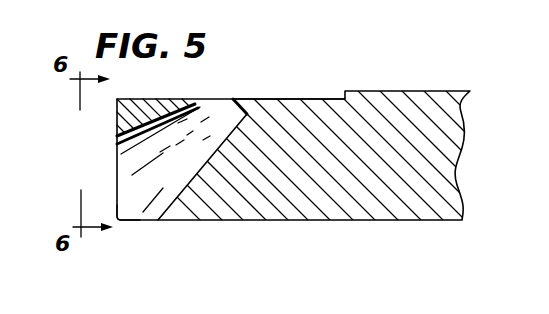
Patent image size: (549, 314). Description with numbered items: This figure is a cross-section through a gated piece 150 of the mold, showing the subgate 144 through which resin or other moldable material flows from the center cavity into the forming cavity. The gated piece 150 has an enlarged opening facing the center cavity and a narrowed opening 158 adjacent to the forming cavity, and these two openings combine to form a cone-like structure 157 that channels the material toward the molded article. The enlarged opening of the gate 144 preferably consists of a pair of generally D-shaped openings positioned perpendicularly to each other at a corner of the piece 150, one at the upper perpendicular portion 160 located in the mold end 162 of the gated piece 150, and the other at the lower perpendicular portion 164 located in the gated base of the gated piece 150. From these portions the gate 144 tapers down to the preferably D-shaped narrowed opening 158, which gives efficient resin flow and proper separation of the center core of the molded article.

The gated piece 150 is at (401, 72).
The subgate 144 is at (136, 226).
The cone-like structure 157 is at (176, 195).
The narrowed opening 158 is at (216, 99).
The upper perpendicular portion 160 is at (117, 122).
The mold end 162 is at (106, 159).
The lower perpendicular portion 164 is at (280, 99).